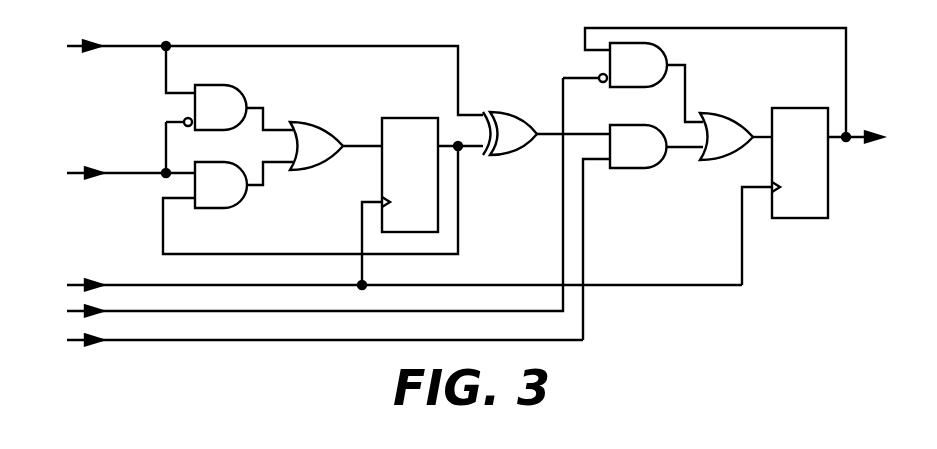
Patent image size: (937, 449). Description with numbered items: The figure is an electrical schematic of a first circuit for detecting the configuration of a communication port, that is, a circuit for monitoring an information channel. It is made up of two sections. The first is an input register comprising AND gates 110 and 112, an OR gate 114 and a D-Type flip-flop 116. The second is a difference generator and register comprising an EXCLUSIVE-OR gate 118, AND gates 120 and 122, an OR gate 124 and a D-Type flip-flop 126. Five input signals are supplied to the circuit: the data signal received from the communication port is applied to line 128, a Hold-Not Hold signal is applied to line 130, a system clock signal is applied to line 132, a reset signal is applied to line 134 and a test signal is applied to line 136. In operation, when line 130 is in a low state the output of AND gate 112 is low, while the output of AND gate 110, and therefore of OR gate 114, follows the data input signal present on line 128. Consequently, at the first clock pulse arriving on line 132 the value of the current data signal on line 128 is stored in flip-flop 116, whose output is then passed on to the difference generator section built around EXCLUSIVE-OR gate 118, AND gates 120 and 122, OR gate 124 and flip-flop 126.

The AND gate 110 is at (249, 62).
The AND gate 112 is at (228, 205).
The OR gate 114 is at (322, 167).
The D-Type flip-flop 116 is at (405, 118).
The EXCLUSIVE-OR gate 118 is at (507, 114).
The AND gate 120 is at (658, 57).
The AND gate 122 is at (640, 170).
The OR gate 124 is at (740, 97).
The D-Type flip-flop 126 is at (815, 220).
The line 128 is at (67, 46).
The line 130 is at (74, 172).
The line 132 is at (73, 279).
The line 134 is at (70, 311).
The line 136 is at (68, 340).